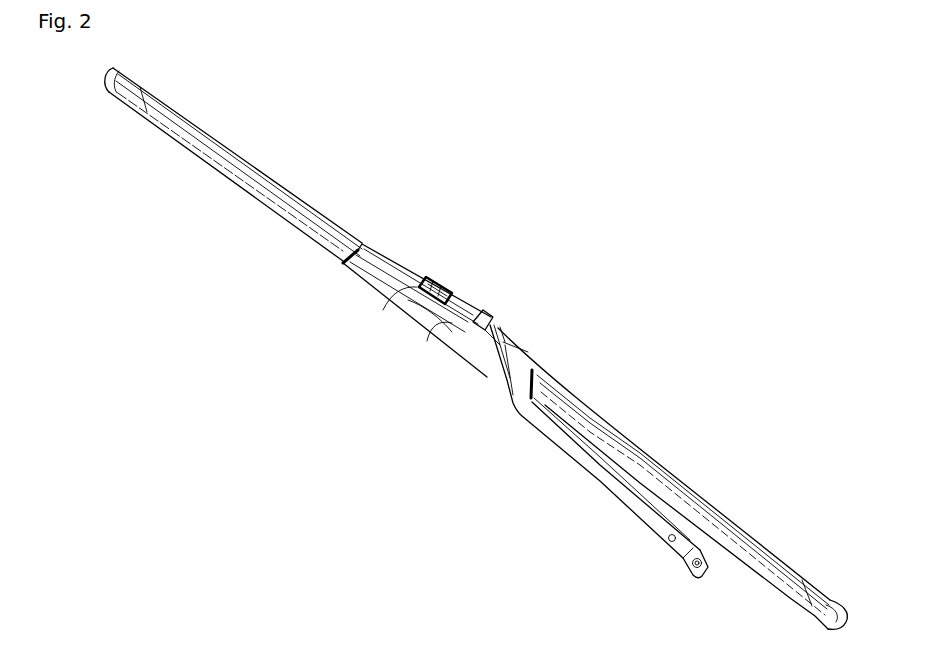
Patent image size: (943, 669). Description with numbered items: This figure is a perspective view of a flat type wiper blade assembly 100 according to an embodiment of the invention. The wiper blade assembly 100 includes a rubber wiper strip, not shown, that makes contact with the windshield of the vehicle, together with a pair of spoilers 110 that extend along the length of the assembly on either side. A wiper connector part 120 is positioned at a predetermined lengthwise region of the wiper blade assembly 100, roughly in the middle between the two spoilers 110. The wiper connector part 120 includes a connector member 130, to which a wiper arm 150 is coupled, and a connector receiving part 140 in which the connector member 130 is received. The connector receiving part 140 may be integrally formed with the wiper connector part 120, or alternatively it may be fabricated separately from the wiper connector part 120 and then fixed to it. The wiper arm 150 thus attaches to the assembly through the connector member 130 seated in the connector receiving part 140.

The wiper blade assembly 100 is at (546, 214).
The spoilers 110 is at (246, 154).
The wiper connector part 120 is at (512, 320).
The connector member 130 is at (441, 322).
The connector receiving part 140 is at (427, 268).
The wiper arm 150 is at (577, 470).